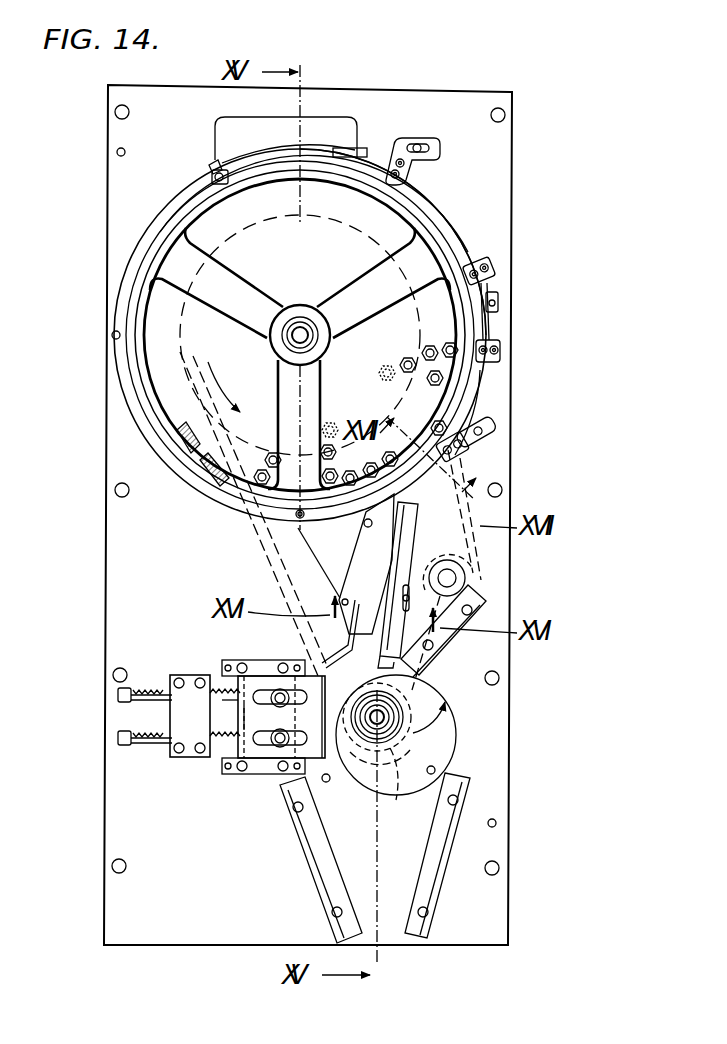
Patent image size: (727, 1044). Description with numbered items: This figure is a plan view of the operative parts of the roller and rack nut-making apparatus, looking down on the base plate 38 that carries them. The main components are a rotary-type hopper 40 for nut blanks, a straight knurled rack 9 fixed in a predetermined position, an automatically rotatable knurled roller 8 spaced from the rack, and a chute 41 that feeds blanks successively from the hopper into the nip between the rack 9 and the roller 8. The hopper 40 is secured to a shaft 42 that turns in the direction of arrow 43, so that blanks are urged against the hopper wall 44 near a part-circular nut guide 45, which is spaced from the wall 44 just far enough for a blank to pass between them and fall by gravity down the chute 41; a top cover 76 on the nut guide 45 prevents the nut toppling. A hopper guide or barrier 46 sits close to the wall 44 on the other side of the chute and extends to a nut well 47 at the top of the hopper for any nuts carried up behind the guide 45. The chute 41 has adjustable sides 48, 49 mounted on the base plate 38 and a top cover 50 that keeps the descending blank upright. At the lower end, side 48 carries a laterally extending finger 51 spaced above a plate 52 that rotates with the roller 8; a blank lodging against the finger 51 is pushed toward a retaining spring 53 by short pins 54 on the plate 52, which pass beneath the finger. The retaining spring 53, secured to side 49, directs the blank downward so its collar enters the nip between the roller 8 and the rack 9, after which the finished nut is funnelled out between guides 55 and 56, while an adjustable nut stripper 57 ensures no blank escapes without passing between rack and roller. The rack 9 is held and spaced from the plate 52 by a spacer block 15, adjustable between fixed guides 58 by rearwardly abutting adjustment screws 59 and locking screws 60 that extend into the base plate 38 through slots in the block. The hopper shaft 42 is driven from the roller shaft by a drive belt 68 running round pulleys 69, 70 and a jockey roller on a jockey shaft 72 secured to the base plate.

The base plate 38 is at (125, 186).
The nut well 47 is at (325, 120).
The top cover 76 is at (436, 207).
The wall 44 is at (450, 248).
The rotary-type hopper 40 is at (342, 335).
The pulley 70 is at (250, 230).
The shaft 42 is at (301, 330).
The part-circular nut guide 45 is at (495, 380).
The arrow 43 is at (227, 386).
The hopper guide or barrier 46 is at (136, 418).
The drive belt 68 is at (250, 548).
The side 49 is at (372, 558).
The top cover 50 is at (406, 519).
The side 48 is at (411, 553).
The chute 41 is at (380, 580).
The jockey shaft 72 is at (457, 578).
The adjustable nut stripper 57 is at (478, 606).
The finger 51 is at (444, 676).
The retaining spring 53 is at (338, 648).
The knurled rack 9 is at (262, 658).
The pins 54 is at (325, 665).
The fixed guides 58 is at (228, 664).
The spacer block 15 is at (222, 684).
The adjustment screws 59 is at (152, 745).
The locking screws 60 is at (276, 778).
The plate 52 is at (456, 720).
The roller 8 is at (440, 732).
The pulley 69 is at (392, 795).
The guide 55 is at (312, 872).
The guide 56 is at (470, 804).